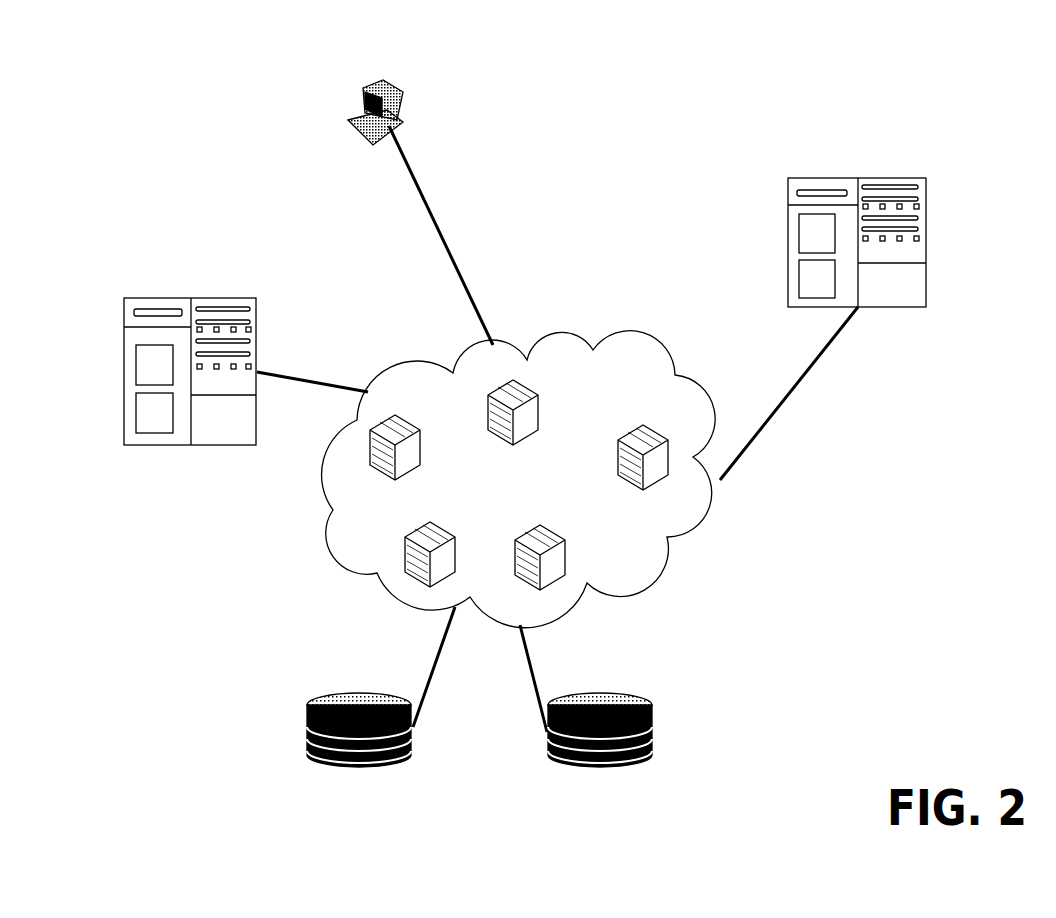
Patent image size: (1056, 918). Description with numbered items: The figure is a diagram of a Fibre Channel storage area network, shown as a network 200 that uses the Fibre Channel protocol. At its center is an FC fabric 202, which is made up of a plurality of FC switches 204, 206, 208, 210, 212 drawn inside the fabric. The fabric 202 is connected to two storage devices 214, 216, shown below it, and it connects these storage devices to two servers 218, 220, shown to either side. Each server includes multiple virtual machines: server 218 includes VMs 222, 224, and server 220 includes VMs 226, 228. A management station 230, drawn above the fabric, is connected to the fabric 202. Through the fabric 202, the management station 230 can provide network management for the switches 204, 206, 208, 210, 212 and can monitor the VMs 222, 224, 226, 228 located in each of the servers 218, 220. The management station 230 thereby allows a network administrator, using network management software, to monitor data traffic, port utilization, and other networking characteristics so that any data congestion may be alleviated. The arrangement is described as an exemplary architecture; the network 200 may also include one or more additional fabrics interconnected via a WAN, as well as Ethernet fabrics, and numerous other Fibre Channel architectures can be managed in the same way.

The network 200 is at (804, 102).
The FC fabric 202 is at (668, 350).
The FC switch 204 is at (527, 395).
The FC switch 206 is at (672, 415).
The FC switch 208 is at (565, 556).
The FC switch 210 is at (462, 540).
The FC switch 212 is at (408, 427).
The storage device 214 is at (370, 677).
The storage device 216 is at (613, 680).
The server 218 is at (176, 355).
The server 220 is at (820, 225).
The VM 222 is at (136, 353).
The VM 224 is at (136, 401).
The VM 226 is at (799, 224).
The VM 228 is at (799, 272).
The management station 230 is at (388, 82).